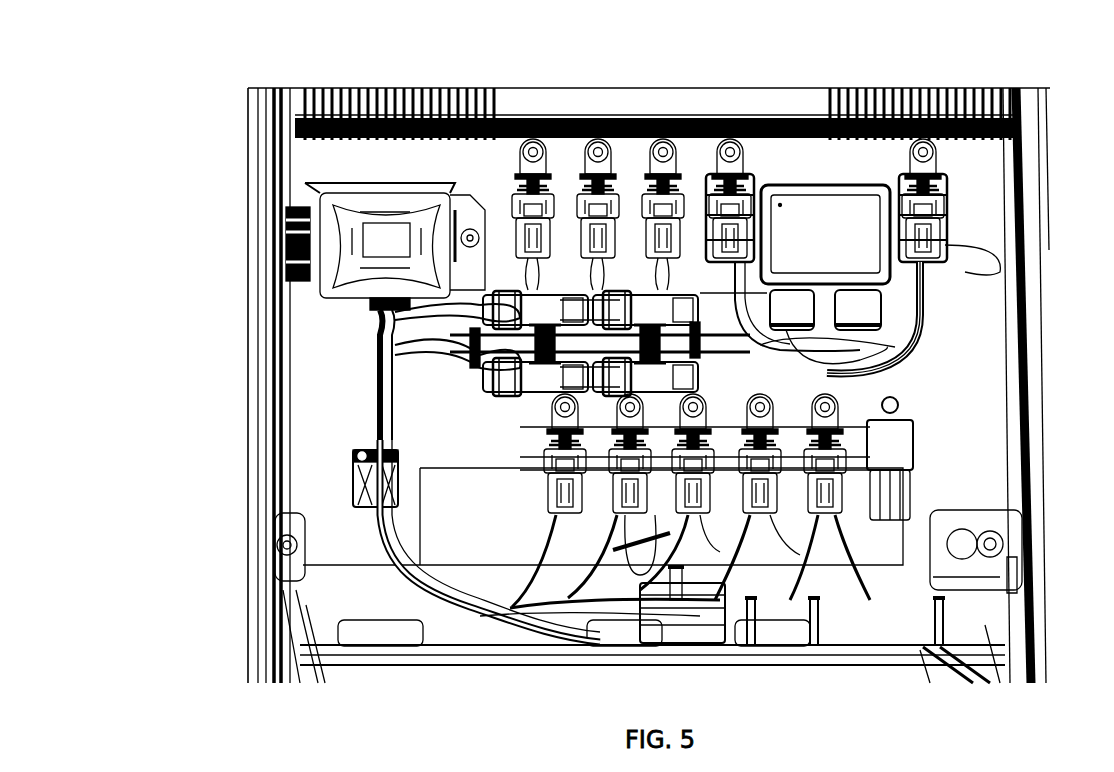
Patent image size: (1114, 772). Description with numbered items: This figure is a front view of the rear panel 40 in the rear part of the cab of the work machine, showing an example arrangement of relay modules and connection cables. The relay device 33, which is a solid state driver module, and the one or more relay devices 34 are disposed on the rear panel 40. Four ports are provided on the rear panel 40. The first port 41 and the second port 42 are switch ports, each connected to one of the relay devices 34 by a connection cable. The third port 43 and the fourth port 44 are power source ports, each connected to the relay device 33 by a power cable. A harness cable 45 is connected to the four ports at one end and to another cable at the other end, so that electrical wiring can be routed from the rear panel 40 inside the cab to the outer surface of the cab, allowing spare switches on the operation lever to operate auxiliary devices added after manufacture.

The relay device 33 is at (830, 215).
The relay devices 34 is at (700, 145).
The rear panel 40 is at (352, 155).
The first port 41 is at (402, 328).
The second port 42 is at (395, 392).
The third port 43 is at (885, 372).
The fourth port 44 is at (895, 430).
The harness cable 45 is at (420, 565).